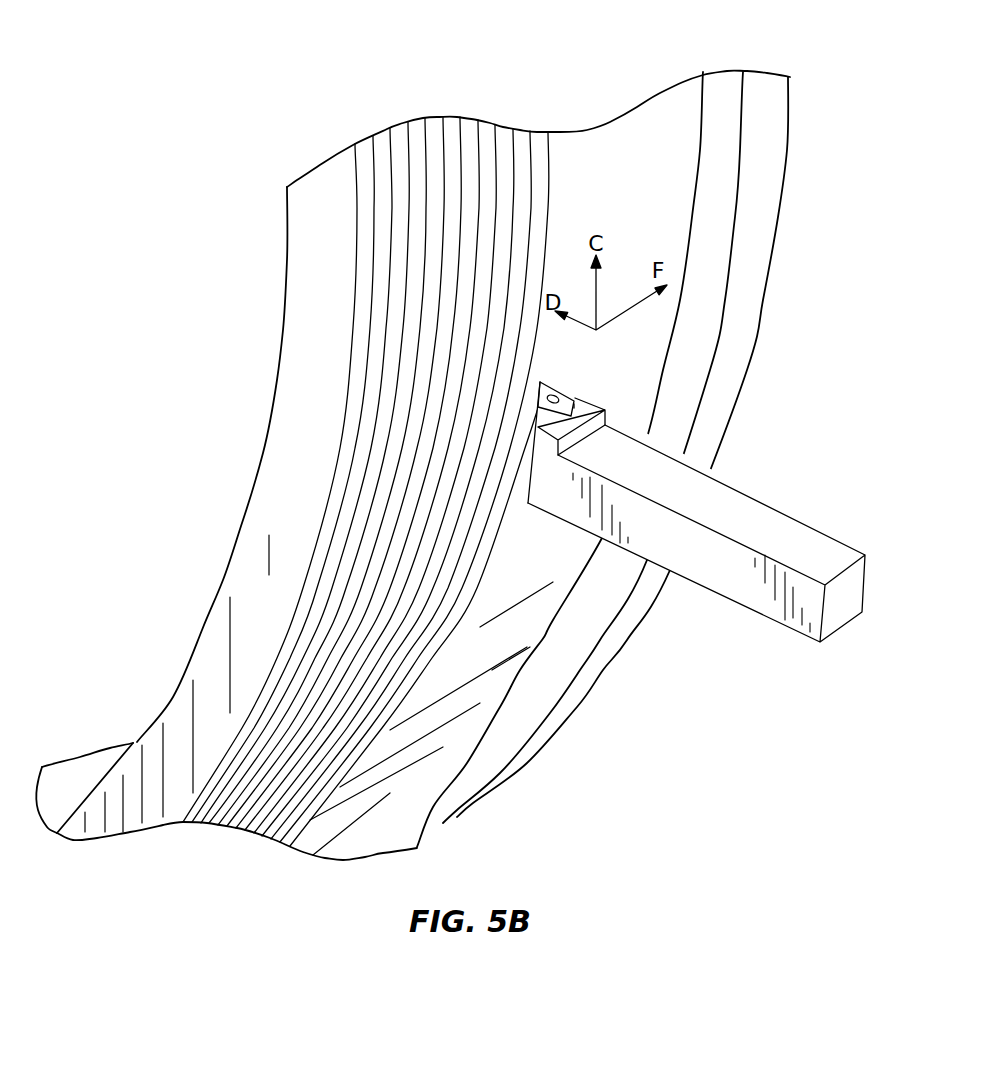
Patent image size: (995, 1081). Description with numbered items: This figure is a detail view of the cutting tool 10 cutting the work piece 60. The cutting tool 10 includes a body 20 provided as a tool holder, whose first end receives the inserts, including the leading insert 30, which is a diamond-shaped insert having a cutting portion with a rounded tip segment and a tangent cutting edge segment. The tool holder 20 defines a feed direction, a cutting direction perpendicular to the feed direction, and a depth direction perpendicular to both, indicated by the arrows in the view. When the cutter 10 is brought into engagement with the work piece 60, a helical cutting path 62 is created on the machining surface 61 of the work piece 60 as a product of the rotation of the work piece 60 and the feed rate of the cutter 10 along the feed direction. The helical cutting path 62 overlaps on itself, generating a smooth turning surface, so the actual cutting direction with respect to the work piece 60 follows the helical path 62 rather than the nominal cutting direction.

The cutting tool 10 is at (696, 495).
The body 20 is at (671, 501).
The leading insert 30 is at (542, 383).
The work piece 60 is at (790, 255).
The machining surface 61 is at (655, 188).
The helical cutting path 62 is at (507, 507).